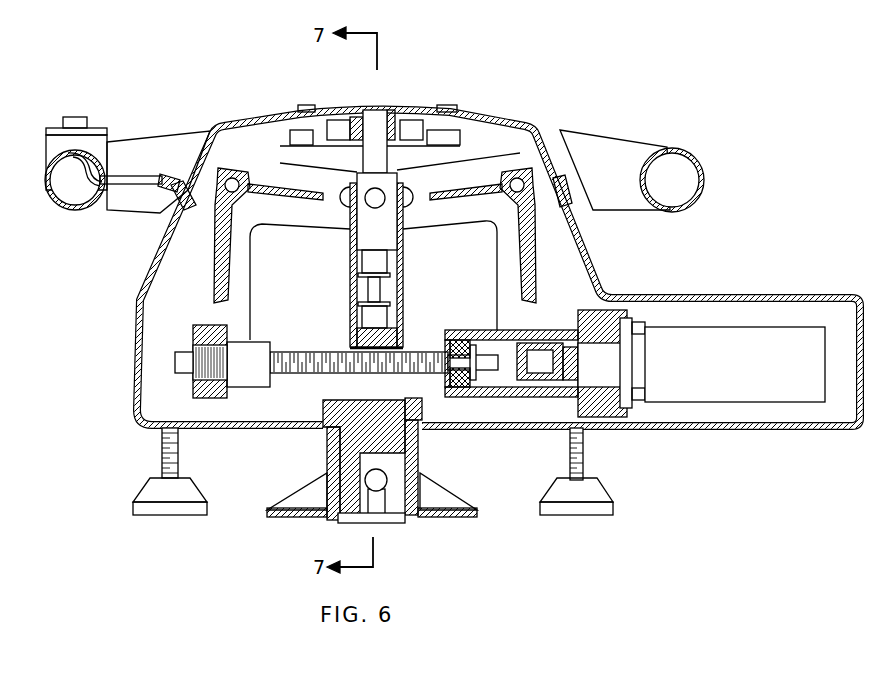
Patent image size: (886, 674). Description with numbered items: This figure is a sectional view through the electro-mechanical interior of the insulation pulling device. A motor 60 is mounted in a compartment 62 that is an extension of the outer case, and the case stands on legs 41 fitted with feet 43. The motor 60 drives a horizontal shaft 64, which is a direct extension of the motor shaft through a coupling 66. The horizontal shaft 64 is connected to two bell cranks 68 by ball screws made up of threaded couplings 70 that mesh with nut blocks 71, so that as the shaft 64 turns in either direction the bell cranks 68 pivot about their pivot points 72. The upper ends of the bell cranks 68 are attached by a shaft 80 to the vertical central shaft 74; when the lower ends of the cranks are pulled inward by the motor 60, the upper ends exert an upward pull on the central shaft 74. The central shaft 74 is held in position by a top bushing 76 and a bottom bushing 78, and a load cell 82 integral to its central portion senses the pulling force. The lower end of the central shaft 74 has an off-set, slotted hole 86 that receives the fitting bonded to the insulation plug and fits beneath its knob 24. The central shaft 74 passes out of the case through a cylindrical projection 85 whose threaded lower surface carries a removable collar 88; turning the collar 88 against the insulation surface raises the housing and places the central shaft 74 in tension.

The knob 24 is at (390, 503).
The legs 41 is at (162, 452).
The feet 43 is at (135, 492).
The motor 60 is at (780, 328).
The compartment 62 is at (710, 297).
The horizontal shaft 64 is at (418, 352).
The coupling 66 is at (600, 417).
The bell cranks 68 is at (260, 255).
The threaded couplings 70 is at (257, 343).
The nut blocks 71 is at (197, 333).
The pivot points 72 is at (230, 180).
The central shaft 74 is at (367, 107).
The top bushing 76 is at (388, 110).
The bottom bushing 78 is at (337, 397).
The shaft 80 is at (381, 189).
The load cell 82 is at (365, 285).
The cylindrical projection 85 is at (418, 453).
The off-set hole 86 is at (327, 460).
The removable collar 88 is at (437, 483).